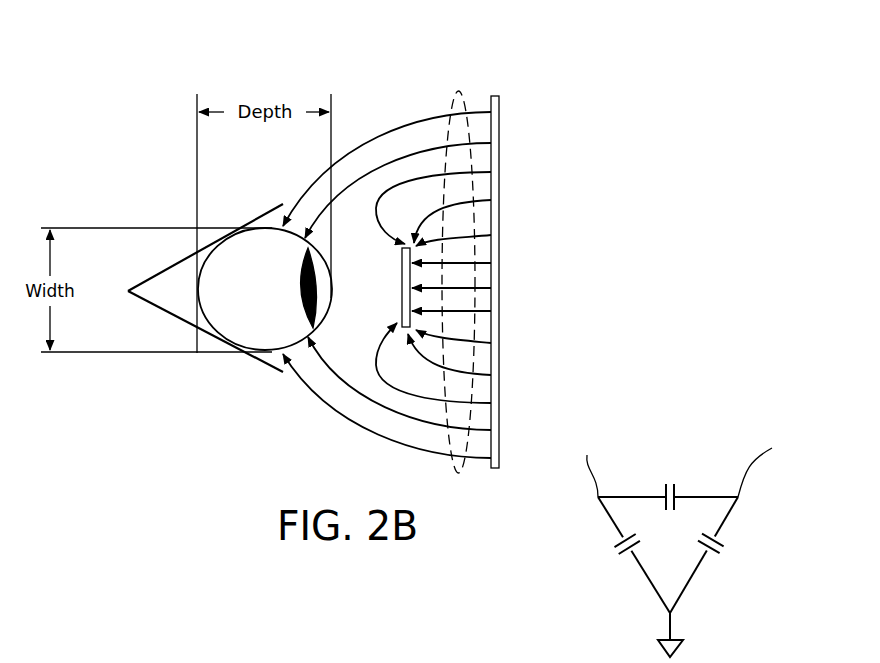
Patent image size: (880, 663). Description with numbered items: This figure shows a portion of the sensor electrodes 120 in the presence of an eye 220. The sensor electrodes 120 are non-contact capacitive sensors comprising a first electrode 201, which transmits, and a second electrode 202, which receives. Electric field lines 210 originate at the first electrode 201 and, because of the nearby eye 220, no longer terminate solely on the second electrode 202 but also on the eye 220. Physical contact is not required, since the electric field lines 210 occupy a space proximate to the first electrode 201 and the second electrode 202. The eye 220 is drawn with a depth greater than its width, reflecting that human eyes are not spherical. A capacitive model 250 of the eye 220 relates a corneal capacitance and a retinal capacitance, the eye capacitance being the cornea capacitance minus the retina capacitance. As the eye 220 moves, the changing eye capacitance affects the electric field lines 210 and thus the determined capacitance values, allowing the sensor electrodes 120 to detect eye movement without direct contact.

The sensor electrodes 120 is at (516, 27).
The first electrode 201 is at (500, 210).
The second electrode 202 is at (397, 253).
The electric field lines 210 is at (461, 474).
The eye 220 is at (227, 343).
The capacitive model 250 is at (677, 440).